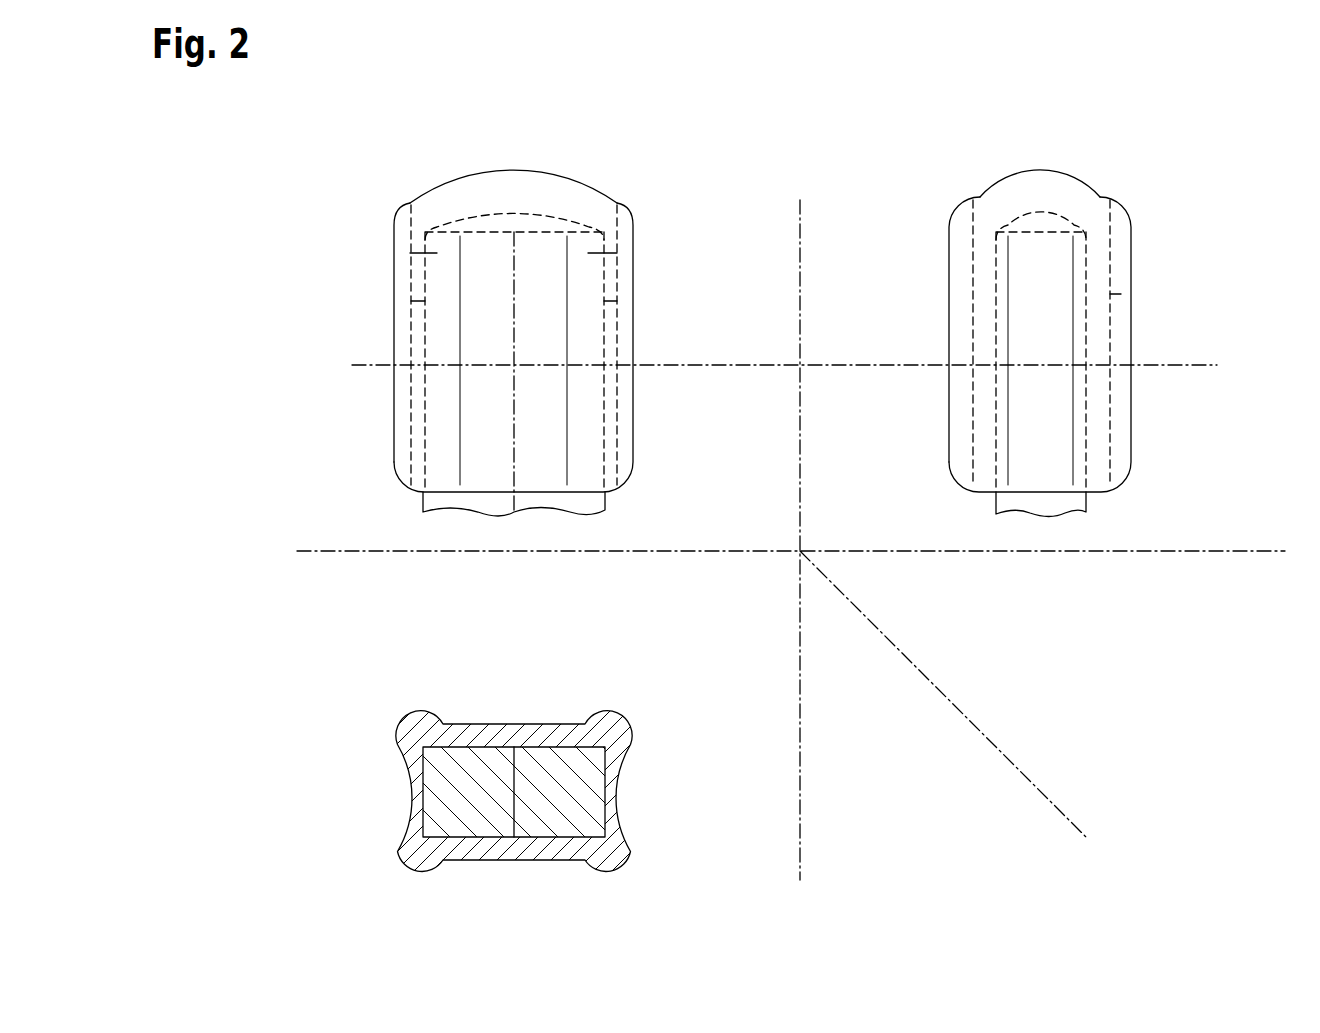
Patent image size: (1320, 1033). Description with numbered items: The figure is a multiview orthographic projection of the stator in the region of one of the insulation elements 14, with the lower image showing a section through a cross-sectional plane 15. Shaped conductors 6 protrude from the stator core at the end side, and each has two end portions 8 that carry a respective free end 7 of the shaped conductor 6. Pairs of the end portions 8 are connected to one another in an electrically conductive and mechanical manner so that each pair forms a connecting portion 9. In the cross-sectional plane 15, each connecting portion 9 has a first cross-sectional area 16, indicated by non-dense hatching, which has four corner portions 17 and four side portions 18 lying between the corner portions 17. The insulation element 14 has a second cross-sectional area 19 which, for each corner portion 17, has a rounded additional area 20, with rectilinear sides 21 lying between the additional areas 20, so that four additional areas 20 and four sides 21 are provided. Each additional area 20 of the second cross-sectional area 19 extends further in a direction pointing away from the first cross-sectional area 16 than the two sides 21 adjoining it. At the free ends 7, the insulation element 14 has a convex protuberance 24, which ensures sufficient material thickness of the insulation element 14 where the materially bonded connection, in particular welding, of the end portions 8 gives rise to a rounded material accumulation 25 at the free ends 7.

The shaped conductor 6 is at (437, 253).
The free end 7 is at (430, 215).
The end portion 8 is at (410, 301).
The connecting portion 9 is at (537, 445).
The insulation element 14 is at (633, 262).
The cross-sectional plane 15 is at (665, 365).
The first cross-sectional area 16 is at (578, 732).
The corner portion 17 is at (403, 723).
The side portion 18 is at (543, 780).
The second cross-sectional area 19 is at (586, 720).
The additional area 20 is at (412, 713).
The side 21 is at (505, 723).
The convex protuberance 24 is at (513, 170).
The material accumulation 25 is at (551, 222).